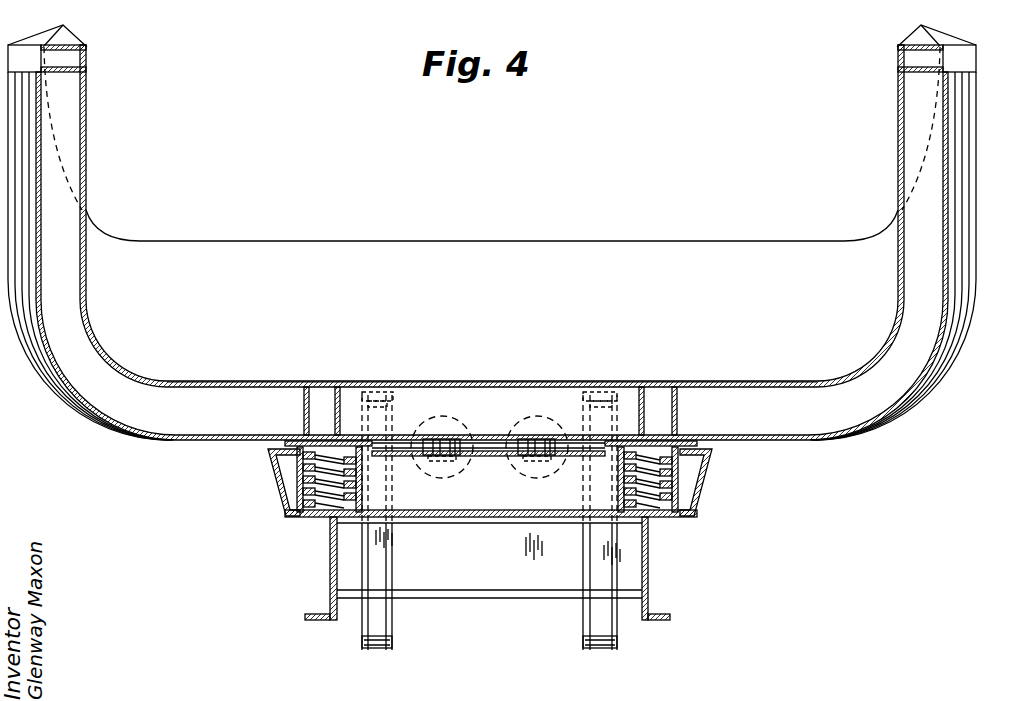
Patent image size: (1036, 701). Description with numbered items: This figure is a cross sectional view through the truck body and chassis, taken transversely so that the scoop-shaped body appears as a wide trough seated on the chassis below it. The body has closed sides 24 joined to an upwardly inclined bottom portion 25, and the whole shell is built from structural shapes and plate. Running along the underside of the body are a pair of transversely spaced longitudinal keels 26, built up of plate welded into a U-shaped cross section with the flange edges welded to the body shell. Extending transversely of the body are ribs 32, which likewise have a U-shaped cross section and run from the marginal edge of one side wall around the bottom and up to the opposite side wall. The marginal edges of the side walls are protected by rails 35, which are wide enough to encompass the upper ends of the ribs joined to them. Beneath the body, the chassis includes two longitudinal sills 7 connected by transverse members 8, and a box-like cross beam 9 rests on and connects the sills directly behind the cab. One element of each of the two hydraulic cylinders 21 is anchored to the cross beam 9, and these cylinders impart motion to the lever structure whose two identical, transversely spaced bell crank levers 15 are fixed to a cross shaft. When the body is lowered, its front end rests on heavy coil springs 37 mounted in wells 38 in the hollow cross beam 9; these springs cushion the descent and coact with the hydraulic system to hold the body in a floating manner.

The longitudinal sill 7 is at (328, 569).
The transverse member 8 is at (500, 598).
The box-like cross beam 9 is at (703, 481).
The bell crank lever 15 is at (395, 622).
The hydraulic cylinder 21 is at (530, 420).
The closed side 24 is at (88, 174).
The upwardly inclined bottom portion 25 is at (214, 380).
The longitudinal keel 26 is at (320, 396).
The rib 32 is at (114, 402).
The rail 35 is at (70, 40).
The coil spring 37 is at (300, 496).
The well 38 is at (292, 514).